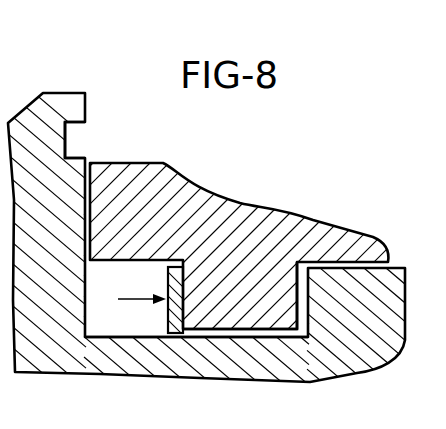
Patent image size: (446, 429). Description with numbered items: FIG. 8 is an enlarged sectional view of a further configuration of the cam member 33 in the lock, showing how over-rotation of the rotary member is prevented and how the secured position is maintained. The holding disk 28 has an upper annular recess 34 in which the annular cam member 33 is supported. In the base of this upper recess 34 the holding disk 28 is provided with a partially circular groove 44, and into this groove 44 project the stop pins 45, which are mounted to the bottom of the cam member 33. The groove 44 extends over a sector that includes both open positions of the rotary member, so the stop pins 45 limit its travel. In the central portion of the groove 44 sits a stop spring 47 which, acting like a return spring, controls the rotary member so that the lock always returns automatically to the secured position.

The holding disk 28 is at (62, 328).
The annular cam member 33 is at (302, 227).
The upper annular recess 34 is at (110, 133).
The partially circular groove 44 is at (204, 336).
The stop pin 45 is at (262, 312).
The stop spring 47 is at (174, 315).